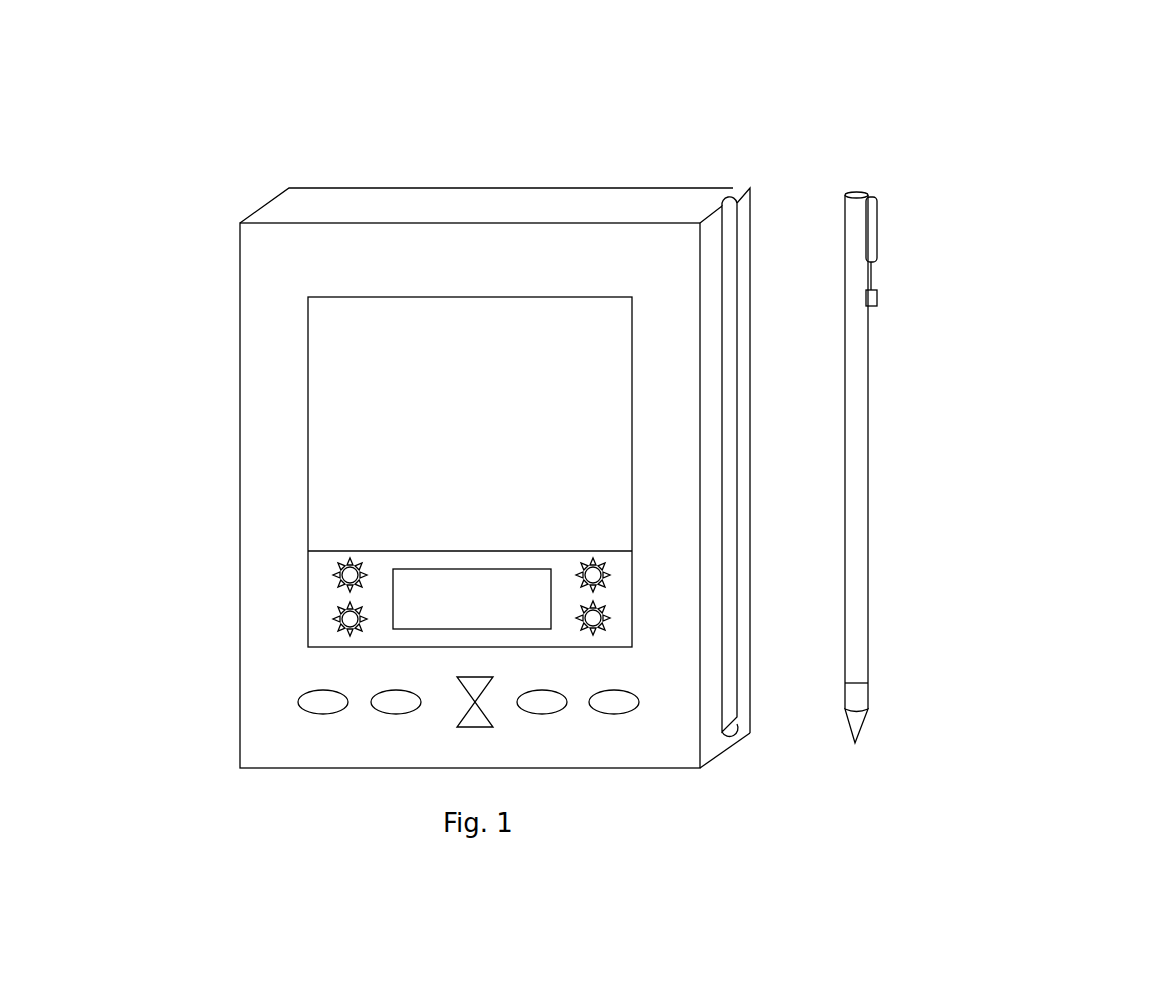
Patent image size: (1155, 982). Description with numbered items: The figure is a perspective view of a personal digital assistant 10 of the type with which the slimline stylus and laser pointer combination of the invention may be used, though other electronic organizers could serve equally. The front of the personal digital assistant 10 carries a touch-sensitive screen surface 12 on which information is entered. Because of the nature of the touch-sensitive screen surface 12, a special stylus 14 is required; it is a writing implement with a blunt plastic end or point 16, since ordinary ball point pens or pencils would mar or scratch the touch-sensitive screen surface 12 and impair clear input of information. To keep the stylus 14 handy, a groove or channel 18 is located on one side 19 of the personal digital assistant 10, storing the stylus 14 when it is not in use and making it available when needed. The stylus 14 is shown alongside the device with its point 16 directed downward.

The personal digital assistant 10 is at (430, 718).
The touch-sensitive screen surface 12 is at (368, 466).
The stylus 14 is at (870, 503).
The point 16 is at (870, 720).
The groove or channel 18 is at (730, 192).
The side 19 is at (750, 298).